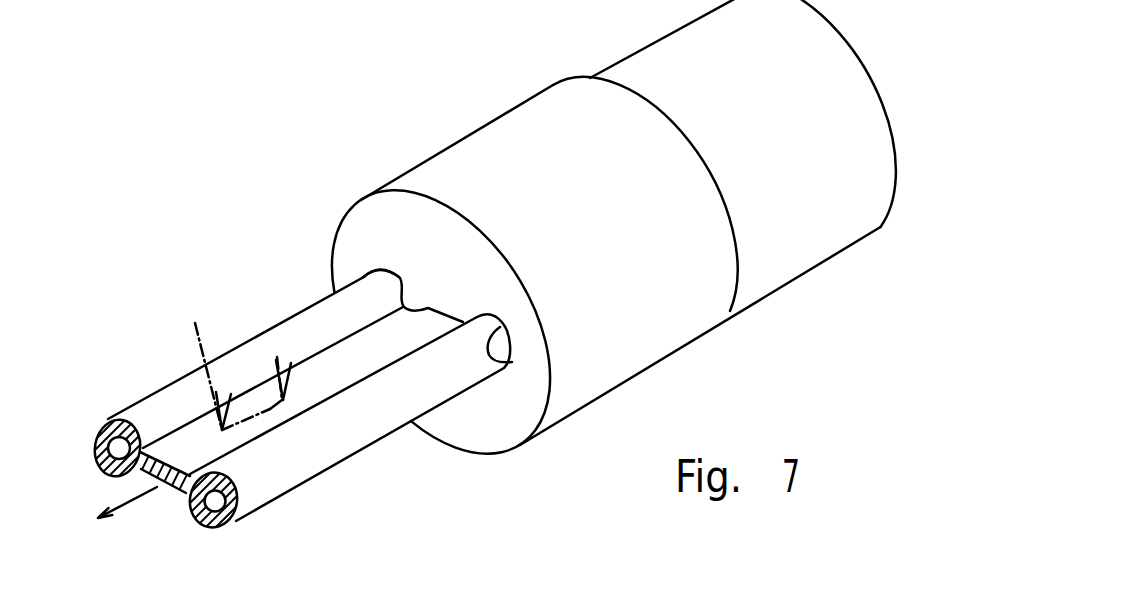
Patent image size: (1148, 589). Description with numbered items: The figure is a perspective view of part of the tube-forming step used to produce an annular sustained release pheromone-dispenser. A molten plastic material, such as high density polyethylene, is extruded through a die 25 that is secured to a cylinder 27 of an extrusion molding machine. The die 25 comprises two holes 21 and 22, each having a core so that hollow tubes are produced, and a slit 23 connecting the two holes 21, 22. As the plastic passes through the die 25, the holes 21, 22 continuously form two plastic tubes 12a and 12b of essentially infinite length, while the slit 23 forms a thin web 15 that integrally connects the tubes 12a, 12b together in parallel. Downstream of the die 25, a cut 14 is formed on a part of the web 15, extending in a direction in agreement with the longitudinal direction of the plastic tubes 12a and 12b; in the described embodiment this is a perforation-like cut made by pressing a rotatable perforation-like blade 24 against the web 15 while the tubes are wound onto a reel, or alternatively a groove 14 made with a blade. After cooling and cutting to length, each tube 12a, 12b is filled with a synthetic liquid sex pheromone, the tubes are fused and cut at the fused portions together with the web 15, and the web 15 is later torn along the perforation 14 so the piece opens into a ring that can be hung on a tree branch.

The plastic tube 12a is at (178, 402).
The plastic tube 12b is at (347, 435).
The cut (groove or perforation) 14 is at (270, 409).
The web 15 is at (348, 363).
The hole of the die 21 is at (362, 277).
The hole of the die 22 is at (512, 362).
The slit 23 is at (402, 280).
The rotatable perforation-like blade 24 is at (221, 356).
The die 25 is at (517, 407).
The cylinder 27 is at (817, 202).